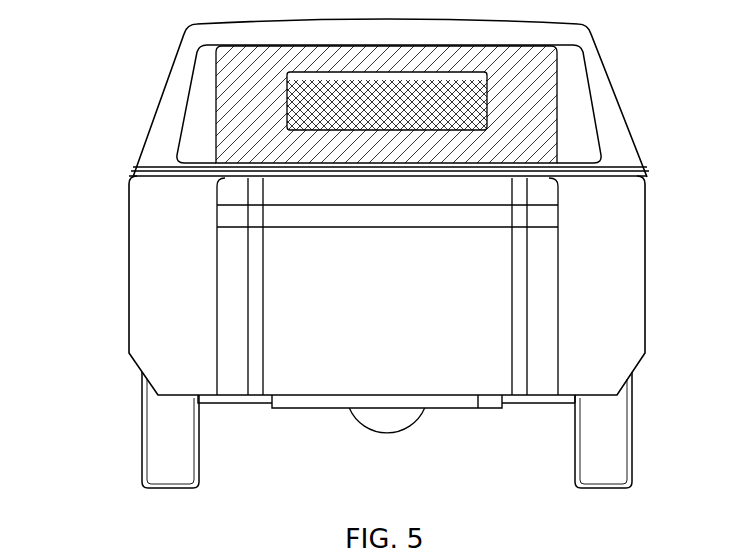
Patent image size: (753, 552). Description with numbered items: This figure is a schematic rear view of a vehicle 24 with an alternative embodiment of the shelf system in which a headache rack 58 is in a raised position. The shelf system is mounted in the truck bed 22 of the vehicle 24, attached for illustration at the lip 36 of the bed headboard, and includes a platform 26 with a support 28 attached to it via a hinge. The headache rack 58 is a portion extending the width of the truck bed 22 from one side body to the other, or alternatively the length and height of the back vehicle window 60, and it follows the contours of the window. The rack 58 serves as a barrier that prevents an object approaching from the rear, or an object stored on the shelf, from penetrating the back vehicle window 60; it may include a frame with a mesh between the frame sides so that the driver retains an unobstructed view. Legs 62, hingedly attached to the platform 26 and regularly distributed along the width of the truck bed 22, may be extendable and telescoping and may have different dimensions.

The truck bed 22 is at (478, 398).
The vehicle 24 is at (582, 36).
The platform 26 is at (147, 171).
The support 28 is at (147, 171).
The lip 36 is at (632, 190).
The headache rack 58 is at (540, 100).
The back vehicle window 60 is at (202, 78).
The legs 62 is at (255, 276).